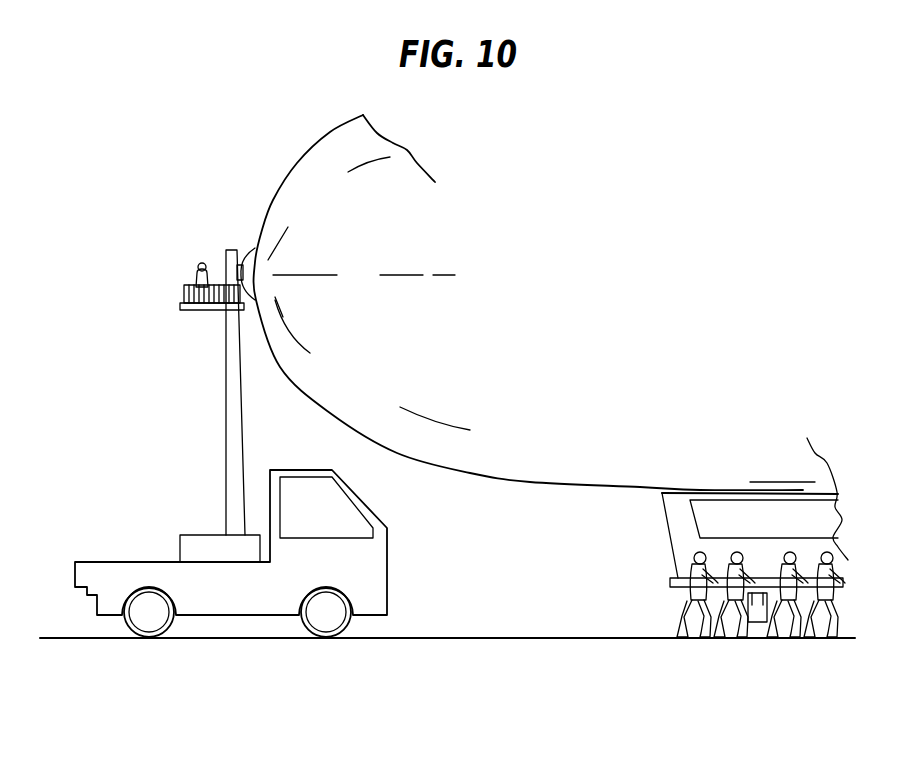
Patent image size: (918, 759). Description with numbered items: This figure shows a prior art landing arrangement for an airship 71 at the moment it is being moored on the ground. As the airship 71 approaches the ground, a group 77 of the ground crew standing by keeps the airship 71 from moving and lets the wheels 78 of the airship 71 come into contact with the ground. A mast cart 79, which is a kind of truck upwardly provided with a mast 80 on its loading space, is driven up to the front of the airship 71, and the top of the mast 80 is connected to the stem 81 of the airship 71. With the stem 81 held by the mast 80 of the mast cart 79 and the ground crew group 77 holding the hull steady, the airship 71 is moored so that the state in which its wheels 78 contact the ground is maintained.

The airship 71 is at (500, 463).
The group of the ground crew 77 is at (660, 583).
The wheels 78 is at (760, 617).
The mast cart 79 is at (393, 573).
The mast 80 is at (223, 353).
The stem 81 is at (267, 235).